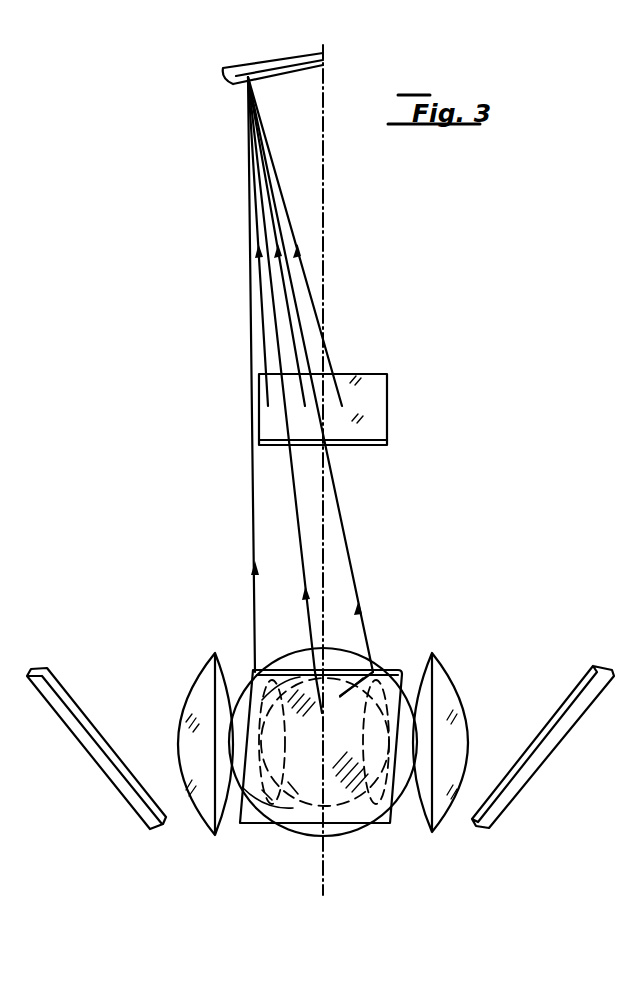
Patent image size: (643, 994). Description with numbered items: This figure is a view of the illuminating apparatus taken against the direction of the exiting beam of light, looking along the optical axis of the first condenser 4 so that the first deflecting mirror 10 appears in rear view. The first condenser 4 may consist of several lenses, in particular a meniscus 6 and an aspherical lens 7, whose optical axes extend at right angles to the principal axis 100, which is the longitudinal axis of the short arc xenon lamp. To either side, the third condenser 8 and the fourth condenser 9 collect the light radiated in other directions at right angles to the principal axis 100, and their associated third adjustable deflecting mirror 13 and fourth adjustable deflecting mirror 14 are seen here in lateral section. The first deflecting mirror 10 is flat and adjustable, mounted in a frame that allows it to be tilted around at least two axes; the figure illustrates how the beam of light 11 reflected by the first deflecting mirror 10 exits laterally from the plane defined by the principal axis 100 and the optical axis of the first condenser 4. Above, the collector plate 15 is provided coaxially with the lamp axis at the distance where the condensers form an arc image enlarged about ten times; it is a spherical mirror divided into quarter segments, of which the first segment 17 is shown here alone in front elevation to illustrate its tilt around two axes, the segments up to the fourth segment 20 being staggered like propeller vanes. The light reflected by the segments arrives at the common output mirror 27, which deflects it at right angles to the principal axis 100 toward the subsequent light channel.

The principal axis 100 is at (332, 190).
The collector plate 15 is at (272, 52).
The first segment 17 is at (236, 72).
The fourth segment 20 is at (293, 318).
The beam of light 11 is at (342, 556).
The output mirror 27 is at (368, 392).
The first deflecting mirror 10 is at (345, 688).
The first condenser 4 is at (342, 845).
The aspherical lens 7 is at (242, 712).
The fourth condenser 9 is at (168, 748).
The third condenser 8 is at (461, 664).
The fourth adjustable deflecting mirror 14 is at (60, 695).
The third adjustable deflecting mirror 13 is at (575, 702).
The meniscus 6 is at (277, 793).